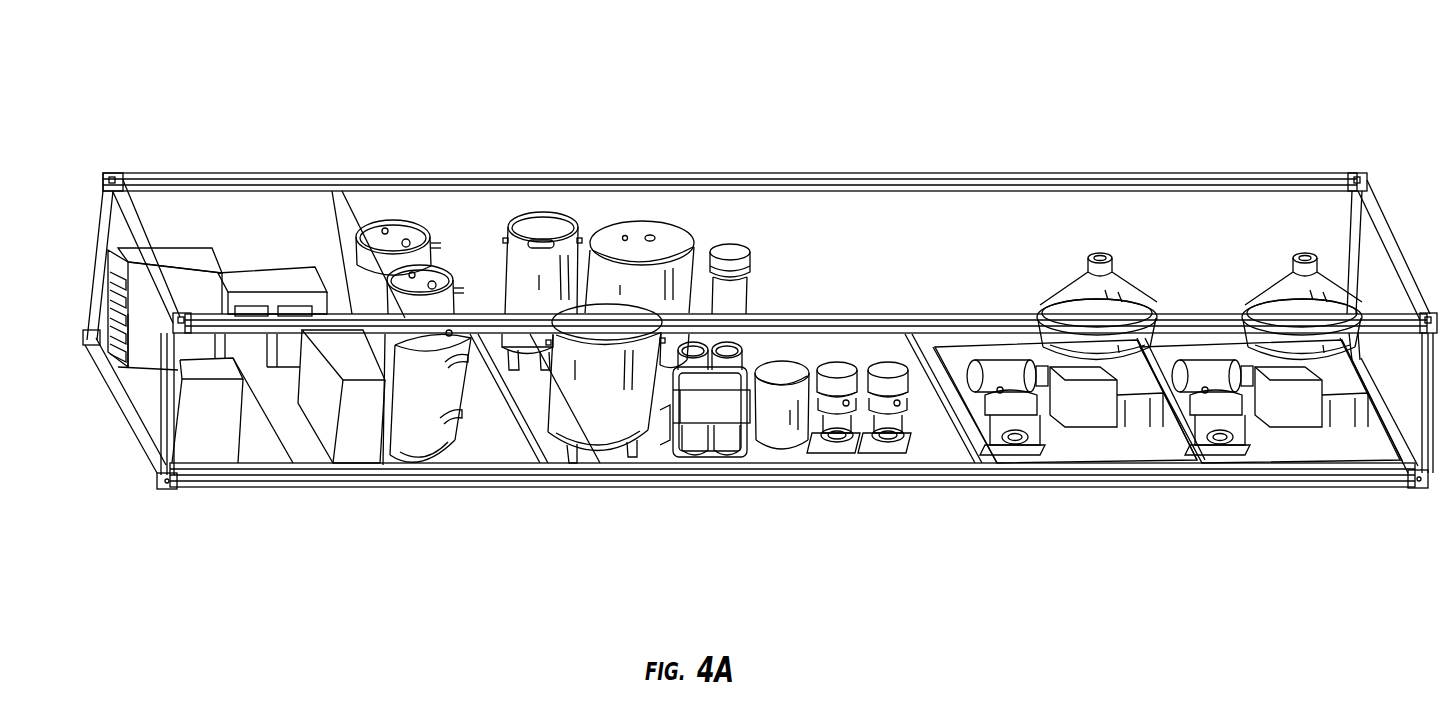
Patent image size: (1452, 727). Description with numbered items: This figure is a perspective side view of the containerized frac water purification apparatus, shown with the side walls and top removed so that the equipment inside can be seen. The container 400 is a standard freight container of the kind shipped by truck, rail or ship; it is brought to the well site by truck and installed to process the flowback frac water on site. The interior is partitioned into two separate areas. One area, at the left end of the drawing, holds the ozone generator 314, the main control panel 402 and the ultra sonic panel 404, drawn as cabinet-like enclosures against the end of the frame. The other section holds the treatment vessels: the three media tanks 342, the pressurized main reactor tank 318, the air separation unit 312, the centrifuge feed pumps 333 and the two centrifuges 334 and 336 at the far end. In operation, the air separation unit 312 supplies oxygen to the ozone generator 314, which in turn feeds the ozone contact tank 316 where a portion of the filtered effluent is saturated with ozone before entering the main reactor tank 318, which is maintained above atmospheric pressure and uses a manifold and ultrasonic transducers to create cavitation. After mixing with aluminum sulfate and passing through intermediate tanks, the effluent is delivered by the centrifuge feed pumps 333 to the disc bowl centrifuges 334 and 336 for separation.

The container 400 is at (818, 118).
The ultra sonic panel 404 is at (268, 270).
The ozone contact tank 316 is at (528, 220).
The disc bowl centrifuge 334 is at (1127, 285).
The disc bowl centrifuge 336 is at (1290, 275).
The ozone generator 314 is at (142, 322).
The main control panel 402 is at (353, 408).
The media tanks 342 is at (432, 440).
The main reactor tank 318 is at (606, 418).
The air separation unit 312 is at (706, 408).
The centrifuge feed pumps 333 is at (1022, 440).